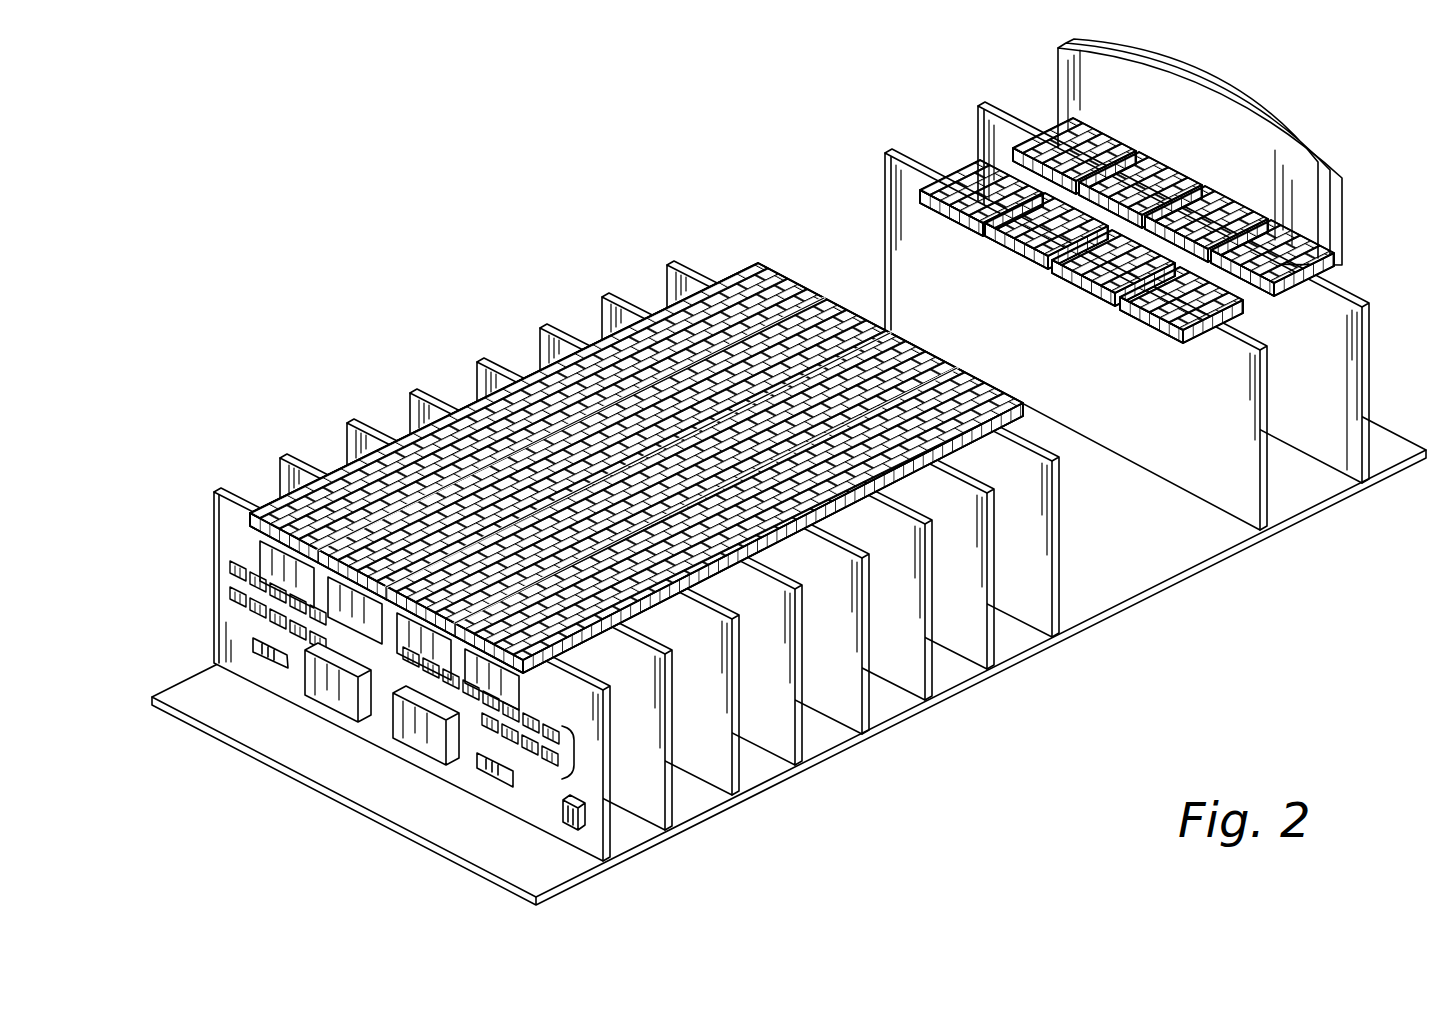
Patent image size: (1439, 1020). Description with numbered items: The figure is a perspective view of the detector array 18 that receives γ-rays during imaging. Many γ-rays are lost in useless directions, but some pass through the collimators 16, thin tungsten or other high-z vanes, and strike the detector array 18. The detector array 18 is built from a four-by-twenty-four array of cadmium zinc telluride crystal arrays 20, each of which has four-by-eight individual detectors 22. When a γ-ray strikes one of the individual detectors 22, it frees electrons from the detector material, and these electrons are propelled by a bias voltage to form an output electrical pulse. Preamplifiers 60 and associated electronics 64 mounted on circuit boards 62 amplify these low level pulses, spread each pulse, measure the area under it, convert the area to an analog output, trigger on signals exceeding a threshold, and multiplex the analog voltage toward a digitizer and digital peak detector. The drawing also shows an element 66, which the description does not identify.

The collimators 16 is at (1343, 213).
The detector array 18 is at (523, 369).
The CZT crystal arrays 20 is at (264, 530).
The individual detectors 22 is at (403, 450).
The preamplifiers 60 is at (274, 557).
The circuit boards 62 is at (612, 772).
The associated electronics 64 is at (575, 757).
The connector box 66 is at (563, 823).